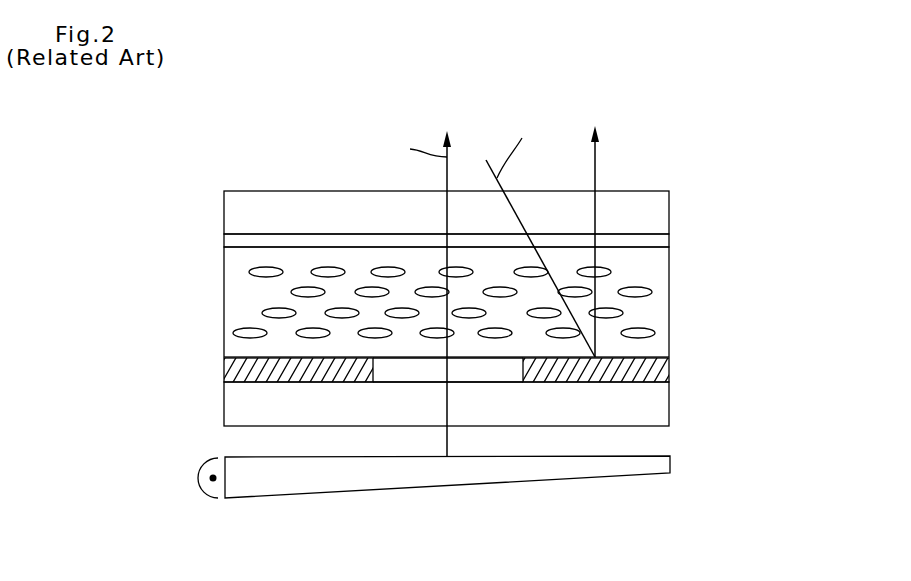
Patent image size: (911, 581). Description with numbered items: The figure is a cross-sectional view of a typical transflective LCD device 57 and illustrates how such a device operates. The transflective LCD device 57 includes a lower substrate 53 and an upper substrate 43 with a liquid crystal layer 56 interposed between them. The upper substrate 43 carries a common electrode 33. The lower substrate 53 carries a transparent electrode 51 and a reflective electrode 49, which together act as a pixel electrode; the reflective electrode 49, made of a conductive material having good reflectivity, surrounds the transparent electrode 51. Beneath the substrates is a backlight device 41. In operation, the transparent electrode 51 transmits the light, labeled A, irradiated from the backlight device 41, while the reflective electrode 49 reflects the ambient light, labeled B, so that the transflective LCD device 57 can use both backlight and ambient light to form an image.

The transflective LCD device 57 is at (183, 240).
The upper substrate 43 is at (669, 213).
The common electrode 33 is at (669, 242).
The liquid crystal layer 56 is at (650, 288).
The reflective electrode 49 is at (670, 373).
The transparent electrode 51 is at (409, 377).
The lower substrate 53 is at (663, 407).
The backlight device 41 is at (670, 466).